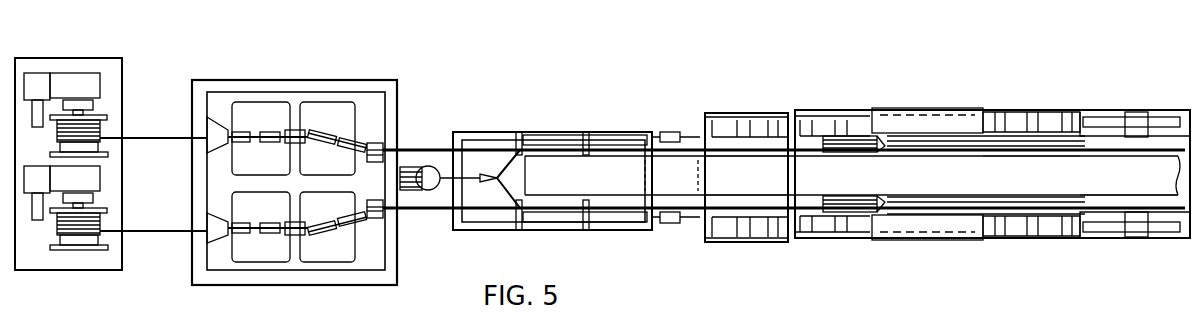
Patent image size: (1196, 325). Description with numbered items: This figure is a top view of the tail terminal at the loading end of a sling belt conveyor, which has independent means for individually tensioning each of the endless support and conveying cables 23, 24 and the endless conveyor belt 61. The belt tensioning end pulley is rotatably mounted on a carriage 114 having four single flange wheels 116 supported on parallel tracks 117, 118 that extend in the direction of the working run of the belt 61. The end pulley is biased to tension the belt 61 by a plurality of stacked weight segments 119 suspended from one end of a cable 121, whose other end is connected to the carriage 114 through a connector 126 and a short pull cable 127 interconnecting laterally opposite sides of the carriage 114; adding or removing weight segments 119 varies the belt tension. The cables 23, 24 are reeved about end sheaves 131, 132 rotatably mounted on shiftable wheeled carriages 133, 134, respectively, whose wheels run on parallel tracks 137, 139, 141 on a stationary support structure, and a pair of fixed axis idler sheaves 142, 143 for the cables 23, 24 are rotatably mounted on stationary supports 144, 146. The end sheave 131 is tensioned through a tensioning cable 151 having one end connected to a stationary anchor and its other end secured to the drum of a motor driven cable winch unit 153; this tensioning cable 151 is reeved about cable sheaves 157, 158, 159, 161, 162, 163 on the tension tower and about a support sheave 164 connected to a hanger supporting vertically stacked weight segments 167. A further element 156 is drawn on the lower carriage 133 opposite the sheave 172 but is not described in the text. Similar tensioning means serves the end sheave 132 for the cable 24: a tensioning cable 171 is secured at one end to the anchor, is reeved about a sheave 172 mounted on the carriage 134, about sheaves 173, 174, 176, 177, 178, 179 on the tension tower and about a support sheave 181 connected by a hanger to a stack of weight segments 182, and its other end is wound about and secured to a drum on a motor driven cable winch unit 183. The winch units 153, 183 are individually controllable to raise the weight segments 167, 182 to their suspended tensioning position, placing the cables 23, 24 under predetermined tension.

The motor driven cable winch unit 183 is at (100, 72).
The sheave 179 is at (192, 126).
The tensioning cable 171 is at (138, 141).
The motor driven cable winch unit 153 is at (92, 189).
The tensioning cable 151 is at (151, 230).
The cable sheave 163 is at (200, 250).
The sheave 178 is at (242, 130).
The sheave 177 is at (268, 130).
The support sheave 181 is at (297, 128).
The weight segments 182 is at (320, 103).
The sheave 176 is at (315, 136).
The sheave 174 is at (398, 108).
The sheave 173 is at (396, 131).
The cable sheave 162 is at (236, 238).
The cable sheave 161 is at (277, 234).
The support sheave 164 is at (297, 236).
The cable sheave 159 is at (327, 236).
The weight segments 167 is at (350, 250).
The cable sheave 157 is at (394, 218).
The cable sheave 158 is at (393, 248).
The weight segments 119 is at (438, 165).
The cable 121 is at (480, 182).
The short pull cable 127 is at (503, 210).
The connector 126 is at (488, 170).
The carriage 114 is at (527, 177).
The track 118 is at (610, 134).
The track 117 is at (600, 223).
The single flange wheels 116 is at (586, 132).
The endless conveyor belt 61 is at (748, 186).
The track 139 is at (757, 118).
The track 137 is at (723, 239).
The track 141 is at (825, 111).
The sheave 172 is at (852, 136).
The lower clamp 156 is at (868, 213).
The wheeled carriage 134 is at (903, 123).
The wheeled carriage 133 is at (942, 216).
The end sheave 132 is at (936, 147).
The end sheave 131 is at (990, 190).
The endless cable 23 is at (1024, 195).
The endless cable 24 is at (1066, 147).
The stationary support 146 is at (1098, 112).
The fixed axis idler sheave 143 is at (1165, 95).
The stationary support 144 is at (1113, 224).
The fixed axis idler sheave 142 is at (1160, 214).